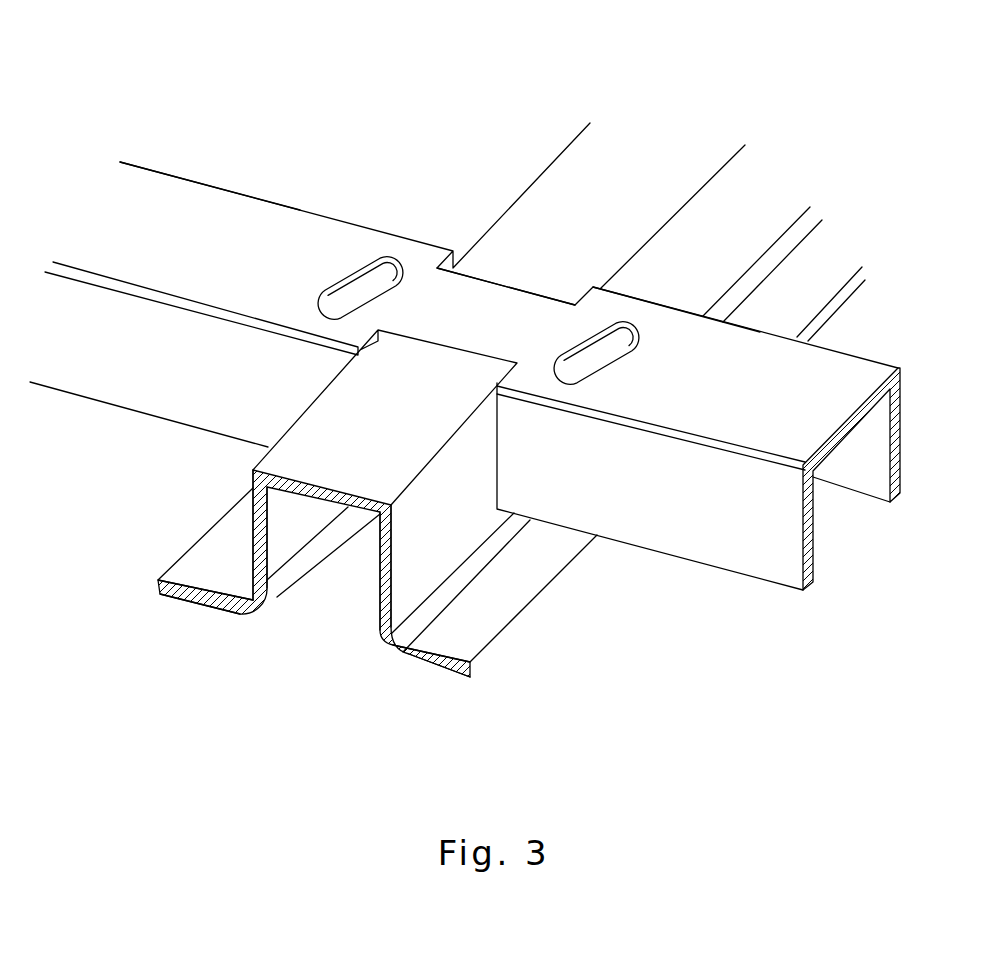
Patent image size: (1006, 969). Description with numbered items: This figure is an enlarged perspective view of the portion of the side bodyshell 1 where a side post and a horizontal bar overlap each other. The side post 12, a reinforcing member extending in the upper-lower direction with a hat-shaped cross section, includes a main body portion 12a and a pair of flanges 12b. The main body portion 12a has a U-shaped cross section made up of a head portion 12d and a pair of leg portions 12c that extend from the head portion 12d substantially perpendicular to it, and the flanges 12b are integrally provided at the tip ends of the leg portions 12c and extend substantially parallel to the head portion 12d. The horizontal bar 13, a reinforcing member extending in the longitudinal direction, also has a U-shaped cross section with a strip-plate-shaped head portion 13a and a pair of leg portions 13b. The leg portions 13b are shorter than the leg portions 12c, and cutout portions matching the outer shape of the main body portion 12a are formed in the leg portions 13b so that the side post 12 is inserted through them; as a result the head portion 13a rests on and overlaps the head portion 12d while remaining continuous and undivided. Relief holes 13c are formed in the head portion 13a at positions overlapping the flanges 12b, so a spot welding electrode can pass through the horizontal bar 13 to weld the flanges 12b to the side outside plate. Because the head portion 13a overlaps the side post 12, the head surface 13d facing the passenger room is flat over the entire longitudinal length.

The side bodyshell 1 is at (898, 102).
The side post 12 is at (380, 536).
The main body portion 12a is at (258, 513).
The flanges 12b is at (197, 607).
The leg portions 12c is at (445, 543).
The head portion 12d is at (335, 417).
The horizontal bar 13 is at (505, 375).
The head portion 13a is at (287, 222).
The leg portions 13b is at (892, 420).
The relief holes 13c is at (372, 277).
The head surface 13d is at (484, 327).